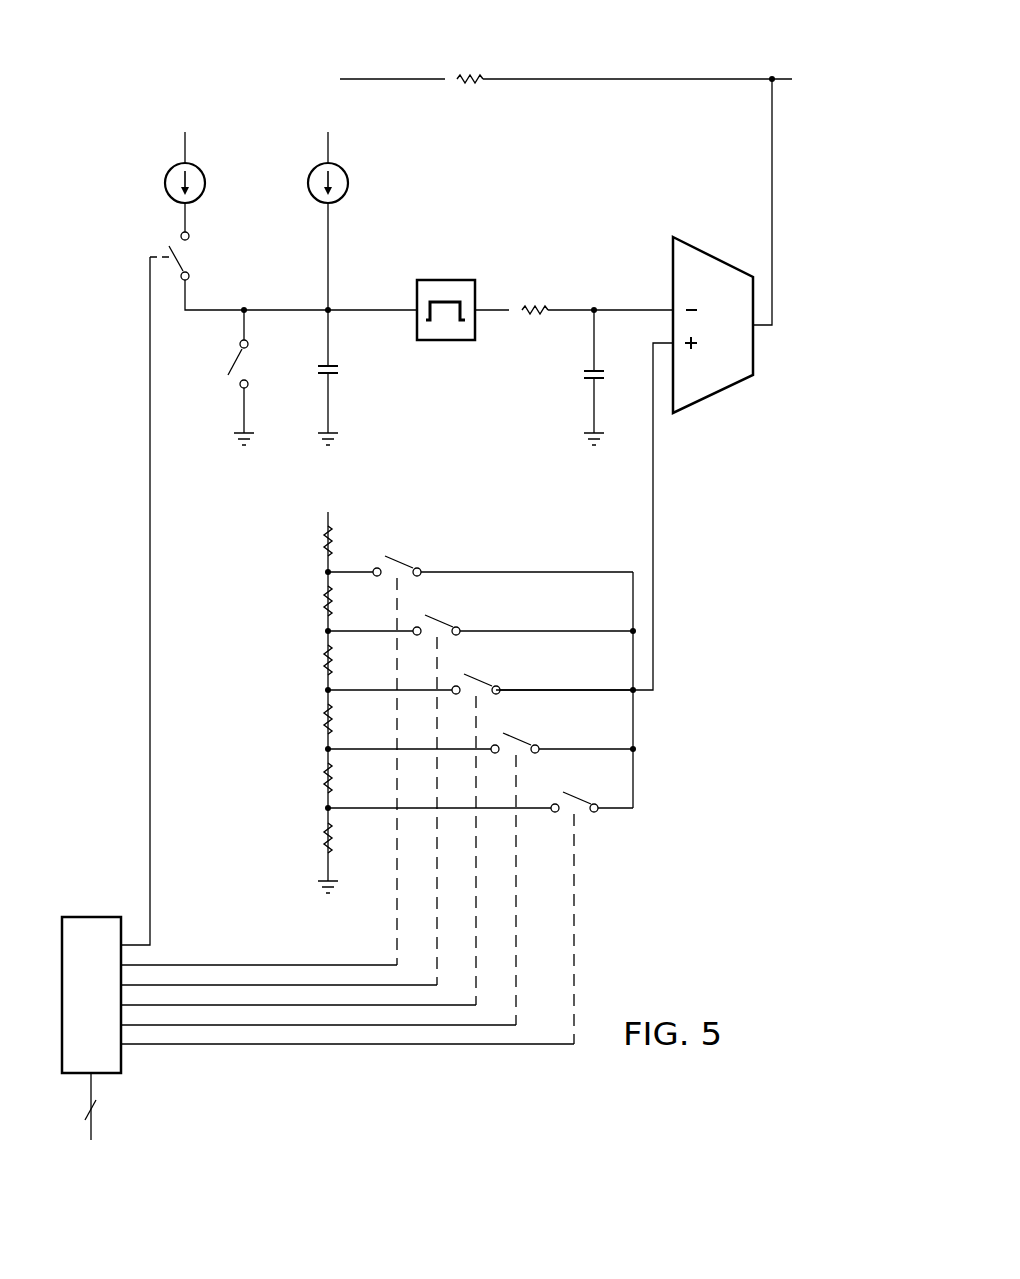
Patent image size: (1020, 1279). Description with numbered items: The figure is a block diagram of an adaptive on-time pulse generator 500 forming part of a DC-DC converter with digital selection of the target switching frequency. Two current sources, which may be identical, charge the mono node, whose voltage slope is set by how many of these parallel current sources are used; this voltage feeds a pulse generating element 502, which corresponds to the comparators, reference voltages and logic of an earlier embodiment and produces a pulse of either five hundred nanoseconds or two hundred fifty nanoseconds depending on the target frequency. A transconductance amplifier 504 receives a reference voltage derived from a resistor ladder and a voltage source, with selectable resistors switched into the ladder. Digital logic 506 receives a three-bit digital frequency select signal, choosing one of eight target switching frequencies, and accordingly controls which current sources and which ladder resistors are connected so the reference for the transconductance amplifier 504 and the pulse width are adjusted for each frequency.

The adaptive on-time pulse generator 500 is at (693, 63).
The pulse generating element 502 is at (446, 280).
The transconductance amplifier 504 is at (712, 252).
The digital logic 506 is at (112, 1009).